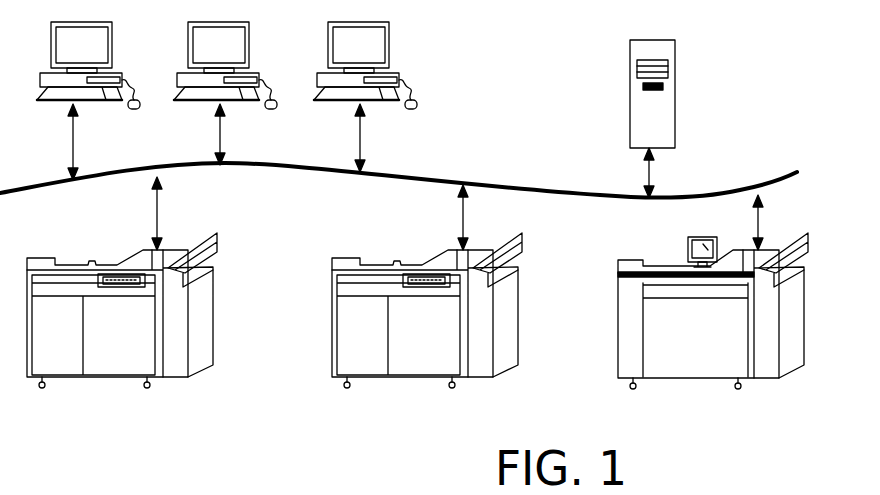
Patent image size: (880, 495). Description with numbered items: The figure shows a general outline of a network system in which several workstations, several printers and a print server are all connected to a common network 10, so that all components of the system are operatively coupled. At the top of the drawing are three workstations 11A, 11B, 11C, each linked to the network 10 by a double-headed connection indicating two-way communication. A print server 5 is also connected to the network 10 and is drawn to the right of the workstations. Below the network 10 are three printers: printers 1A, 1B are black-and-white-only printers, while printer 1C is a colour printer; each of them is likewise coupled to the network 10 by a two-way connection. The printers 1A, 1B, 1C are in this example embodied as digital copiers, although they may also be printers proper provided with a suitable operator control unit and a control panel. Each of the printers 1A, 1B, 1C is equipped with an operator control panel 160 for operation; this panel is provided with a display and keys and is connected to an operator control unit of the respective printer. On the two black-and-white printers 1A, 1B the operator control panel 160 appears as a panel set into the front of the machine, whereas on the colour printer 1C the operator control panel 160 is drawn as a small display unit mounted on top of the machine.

The printer 1A is at (213, 333).
The printer 1B is at (518, 333).
The printer 1C is at (805, 342).
The print server 5 is at (676, 88).
The network 10 is at (473, 181).
The workstation 11A is at (112, 48).
The workstation 11B is at (250, 62).
The workstation 11C is at (390, 40).
The operator control panel 160 is at (104, 277).